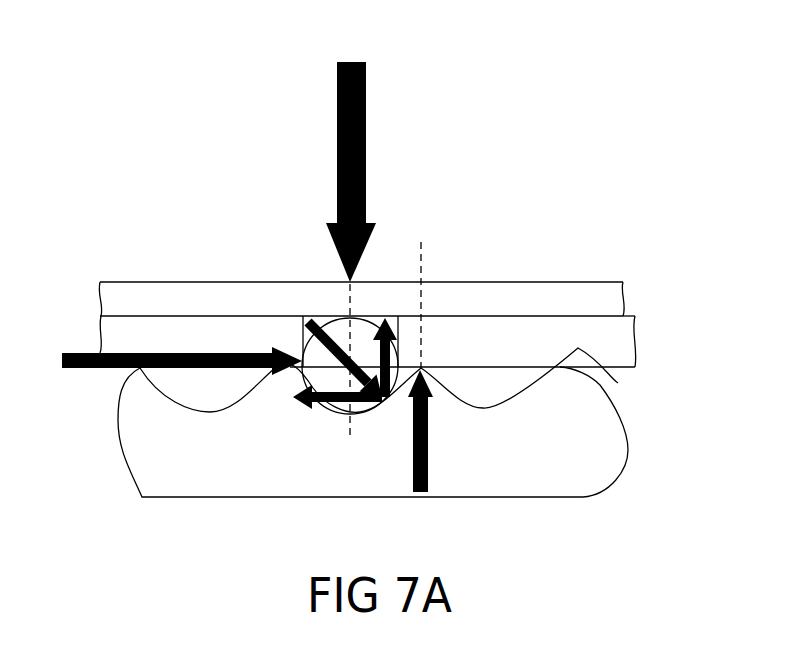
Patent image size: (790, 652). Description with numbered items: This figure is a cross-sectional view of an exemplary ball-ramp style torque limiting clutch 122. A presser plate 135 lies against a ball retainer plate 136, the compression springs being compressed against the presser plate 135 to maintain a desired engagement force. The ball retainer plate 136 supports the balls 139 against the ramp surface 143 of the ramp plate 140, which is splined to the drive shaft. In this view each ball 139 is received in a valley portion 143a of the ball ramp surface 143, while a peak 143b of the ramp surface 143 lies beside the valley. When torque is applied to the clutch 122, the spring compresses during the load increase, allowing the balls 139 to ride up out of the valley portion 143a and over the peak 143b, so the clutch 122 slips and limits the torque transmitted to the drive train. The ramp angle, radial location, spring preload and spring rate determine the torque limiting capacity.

The torque limiting clutch 122 is at (172, 205).
The presser plate 135 is at (553, 298).
The ball retainer plate 136 is at (617, 347).
The ball 139 is at (316, 354).
The ramp plate 140 is at (577, 448).
The ramp surface 143 is at (362, 413).
The valley portion 143a is at (493, 413).
The peak 143b is at (618, 383).